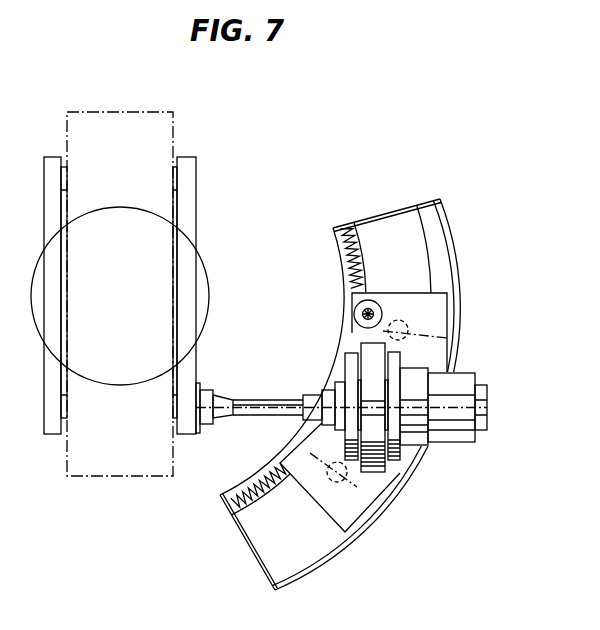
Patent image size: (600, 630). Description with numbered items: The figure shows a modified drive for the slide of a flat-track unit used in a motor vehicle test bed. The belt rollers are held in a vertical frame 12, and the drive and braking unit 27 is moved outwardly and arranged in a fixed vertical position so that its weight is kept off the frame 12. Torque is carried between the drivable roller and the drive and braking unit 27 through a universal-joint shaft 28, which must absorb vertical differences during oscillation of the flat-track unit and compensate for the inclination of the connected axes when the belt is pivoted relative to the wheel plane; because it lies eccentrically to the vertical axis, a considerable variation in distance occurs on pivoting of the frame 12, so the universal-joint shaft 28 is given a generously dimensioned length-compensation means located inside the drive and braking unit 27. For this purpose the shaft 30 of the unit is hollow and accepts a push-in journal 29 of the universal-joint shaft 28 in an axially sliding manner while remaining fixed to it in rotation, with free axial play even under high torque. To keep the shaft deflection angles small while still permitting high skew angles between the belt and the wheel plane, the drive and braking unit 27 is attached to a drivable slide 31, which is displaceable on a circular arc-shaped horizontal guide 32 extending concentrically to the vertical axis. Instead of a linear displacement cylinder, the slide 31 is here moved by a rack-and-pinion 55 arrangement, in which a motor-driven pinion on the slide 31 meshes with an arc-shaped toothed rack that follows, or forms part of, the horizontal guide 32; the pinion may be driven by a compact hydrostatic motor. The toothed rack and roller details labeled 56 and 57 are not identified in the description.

The frame 12 is at (200, 169).
The drive and braking unit 27 is at (468, 320).
The universal-joint shaft 28 is at (282, 400).
The push-in journal 29 is at (337, 388).
The hollow shaft 30 is at (418, 502).
The slide 31 is at (432, 326).
The horizontal guide 32 is at (477, 196).
The rack-and-pinion 55 is at (355, 316).
The roller 56 is at (375, 305).
The rack teeth 57 is at (262, 484).